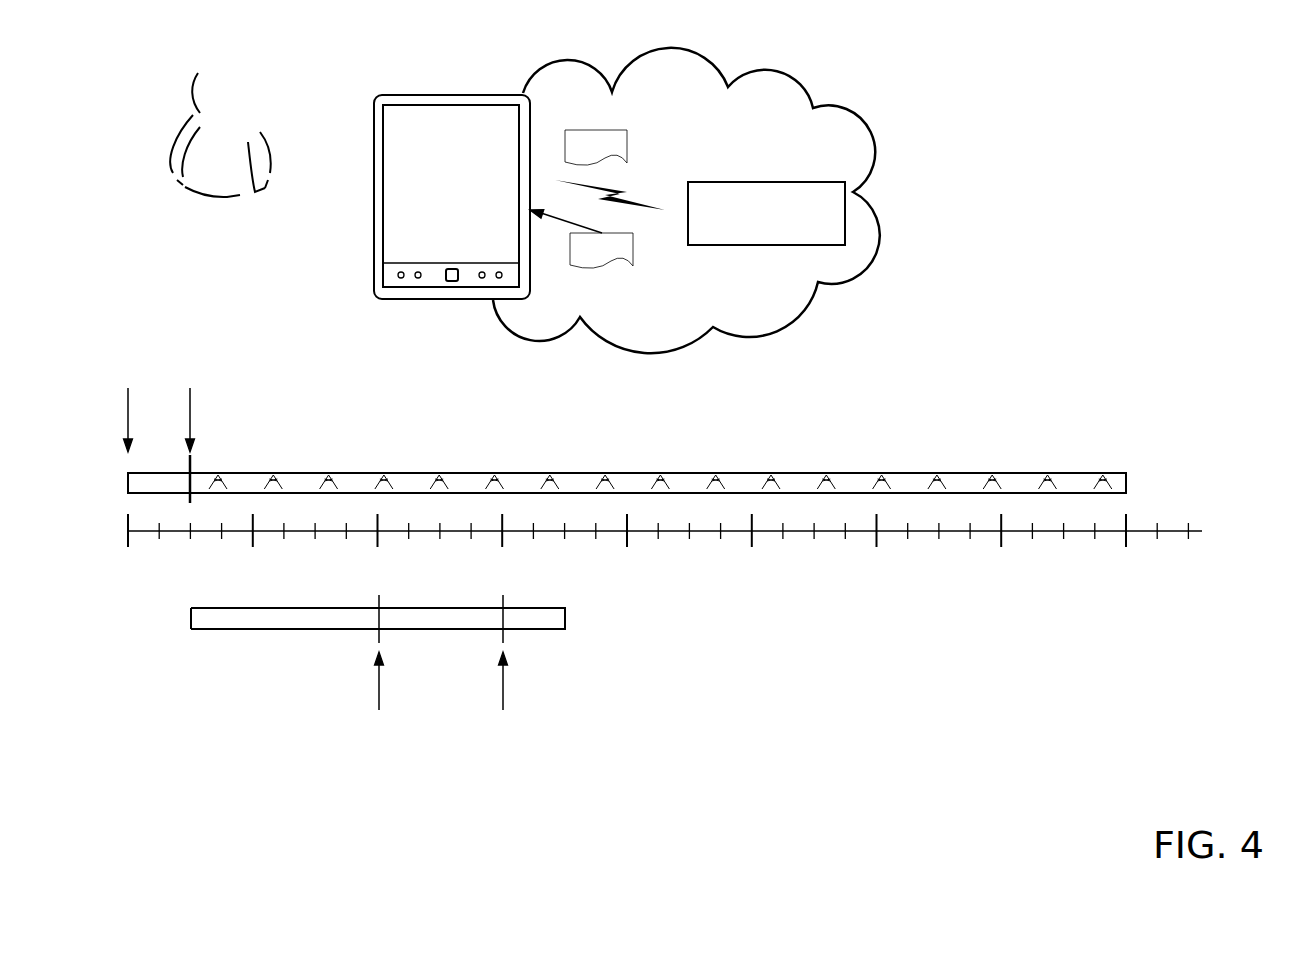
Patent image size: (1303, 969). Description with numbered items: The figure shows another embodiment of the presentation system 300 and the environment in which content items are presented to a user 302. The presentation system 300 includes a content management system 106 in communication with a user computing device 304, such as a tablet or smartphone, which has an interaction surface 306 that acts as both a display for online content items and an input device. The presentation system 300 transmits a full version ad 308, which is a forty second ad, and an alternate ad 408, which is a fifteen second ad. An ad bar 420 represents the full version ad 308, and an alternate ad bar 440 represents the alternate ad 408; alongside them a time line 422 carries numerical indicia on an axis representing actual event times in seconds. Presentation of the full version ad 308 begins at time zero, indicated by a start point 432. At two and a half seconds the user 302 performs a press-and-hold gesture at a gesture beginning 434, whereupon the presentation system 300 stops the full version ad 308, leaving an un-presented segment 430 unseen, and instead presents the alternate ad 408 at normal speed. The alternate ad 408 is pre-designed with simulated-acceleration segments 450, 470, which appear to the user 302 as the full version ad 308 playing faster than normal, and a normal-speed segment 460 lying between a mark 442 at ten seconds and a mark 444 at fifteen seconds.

The user 302 is at (192, 113).
The user computing device 304 is at (380, 95).
The interaction surface 306 is at (383, 147).
The alternate ad 408 is at (595, 128).
The full version ad 308 is at (602, 267).
The content management system 106 is at (847, 213).
The presentation system 300 is at (800, 318).
The ad bar 420 is at (644, 414).
The un-presented segment 430 is at (387, 466).
The start point 432 is at (128, 408).
The gesture beginning 434 is at (191, 433).
The time line 422 is at (1192, 560).
The alternate ad bar 440 is at (399, 684).
The mark 442 is at (379, 667).
The mark 444 is at (503, 667).
The simulated-acceleration segment 450 is at (287, 632).
The normal-speed segment 460 is at (459, 632).
The simulated-acceleration segment 470 is at (541, 630).